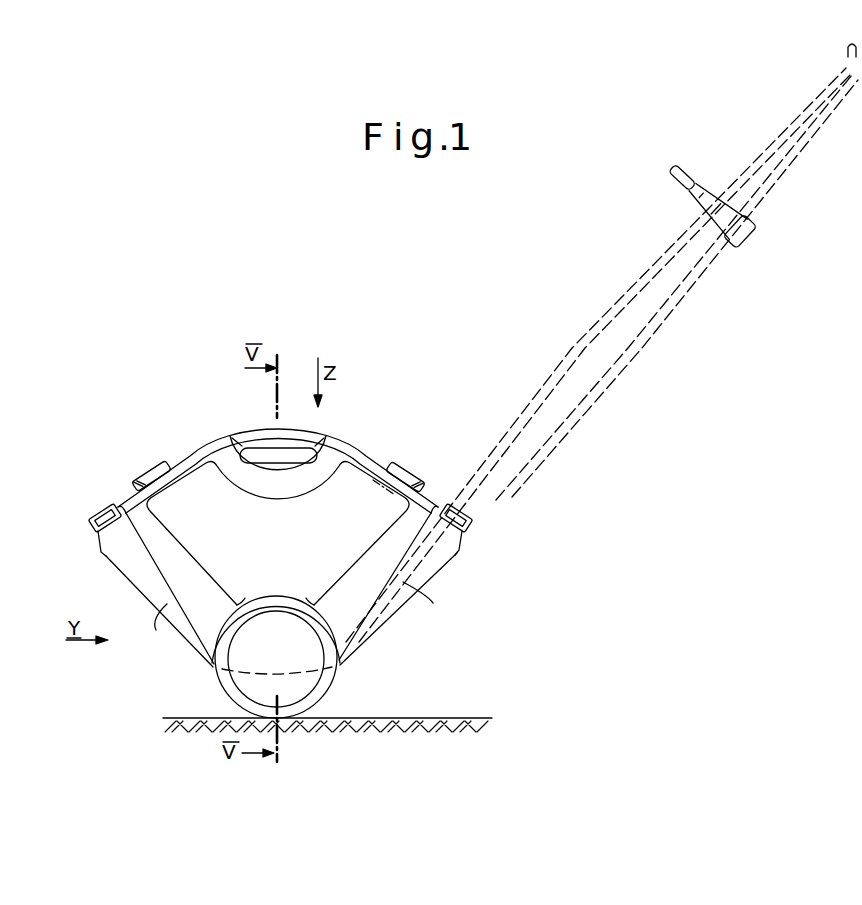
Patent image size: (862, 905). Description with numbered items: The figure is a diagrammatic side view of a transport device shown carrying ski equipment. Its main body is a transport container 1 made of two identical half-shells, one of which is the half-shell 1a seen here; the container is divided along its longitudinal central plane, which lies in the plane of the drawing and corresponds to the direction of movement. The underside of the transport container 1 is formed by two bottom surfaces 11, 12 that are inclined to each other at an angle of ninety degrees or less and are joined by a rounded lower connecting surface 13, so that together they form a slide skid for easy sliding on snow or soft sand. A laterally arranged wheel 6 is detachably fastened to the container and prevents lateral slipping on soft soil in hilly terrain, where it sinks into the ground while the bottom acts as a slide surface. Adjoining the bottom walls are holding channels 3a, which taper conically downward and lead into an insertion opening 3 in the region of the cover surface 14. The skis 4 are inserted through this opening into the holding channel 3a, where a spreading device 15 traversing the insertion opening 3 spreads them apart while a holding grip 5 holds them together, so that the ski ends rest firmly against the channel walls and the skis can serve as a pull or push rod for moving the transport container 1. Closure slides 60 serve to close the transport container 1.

The transport container 1 is at (366, 431).
The half-shell 1a is at (290, 542).
The insertion opening 3 is at (117, 506).
The holding channel 3a is at (156, 630).
The skis 4 is at (597, 317).
The holding grip 5 is at (697, 190).
The wheel 6 is at (308, 675).
The bottom surface 11 is at (395, 617).
The bottom surface 12 is at (123, 576).
The connecting surface 13 is at (262, 677).
The cover surface 14 is at (204, 442).
The spreading device 15 is at (94, 519).
The closure slide 60 is at (155, 466).